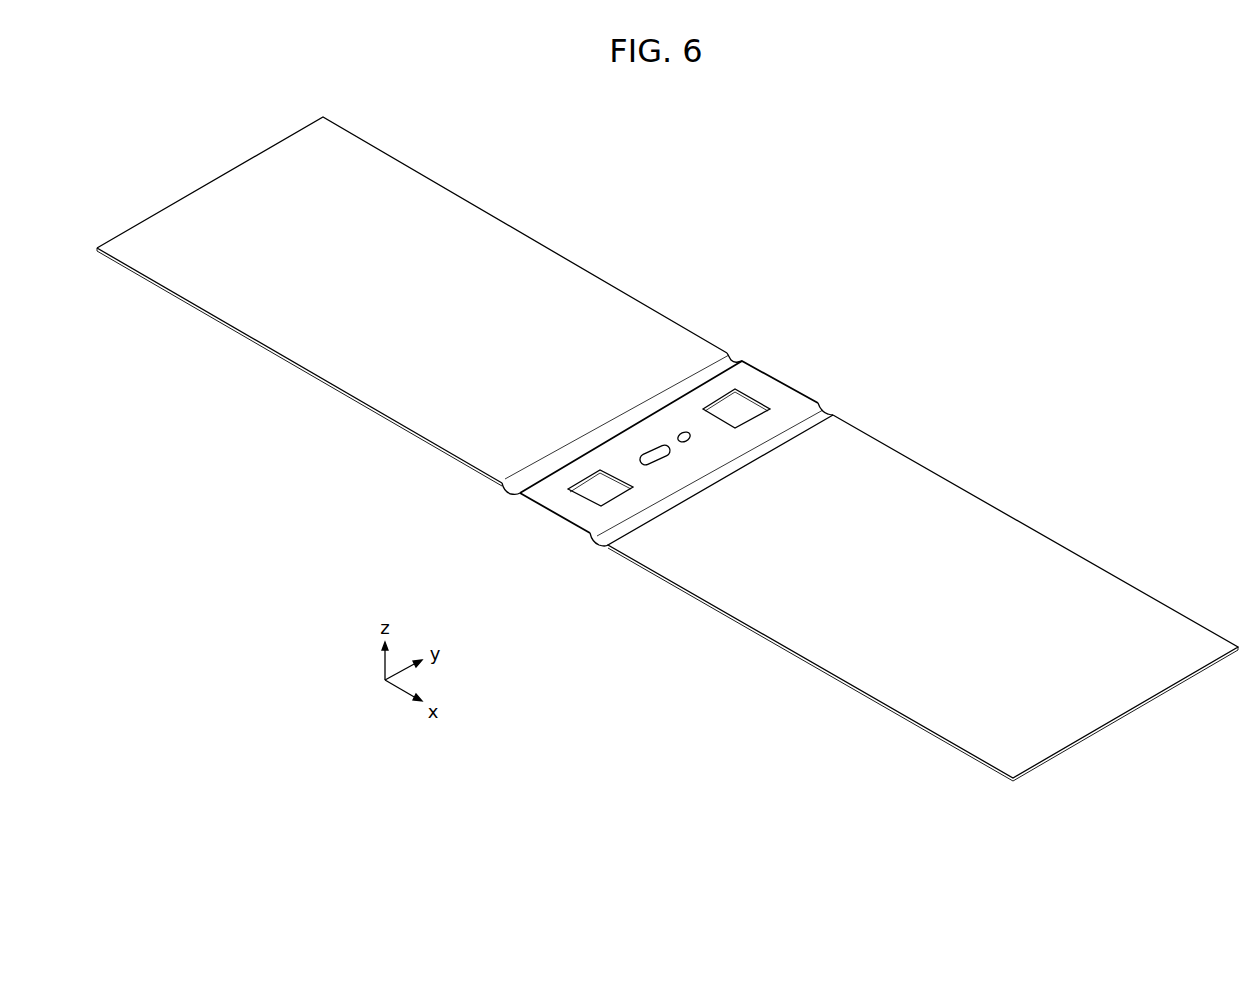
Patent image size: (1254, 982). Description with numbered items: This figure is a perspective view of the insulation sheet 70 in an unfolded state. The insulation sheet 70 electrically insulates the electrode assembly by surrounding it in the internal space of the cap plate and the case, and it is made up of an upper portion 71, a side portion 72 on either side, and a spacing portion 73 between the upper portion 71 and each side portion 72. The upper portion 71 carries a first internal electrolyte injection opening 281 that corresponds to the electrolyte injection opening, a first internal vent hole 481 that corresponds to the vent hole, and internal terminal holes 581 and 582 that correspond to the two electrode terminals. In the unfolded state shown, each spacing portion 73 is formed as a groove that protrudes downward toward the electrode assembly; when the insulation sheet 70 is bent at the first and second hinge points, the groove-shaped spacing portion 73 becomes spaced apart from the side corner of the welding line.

The insulation sheet 70 is at (667, 449).
The upper portion 71 is at (669, 428).
The side portion 72 is at (395, 408).
The spacing portion 73 is at (505, 493).
The first internal electrolyte injection opening 281 is at (679, 433).
The first internal vent hole 481 is at (641, 452).
The internal terminal hole 581 is at (581, 475).
The internal terminal hole 582 is at (743, 391).